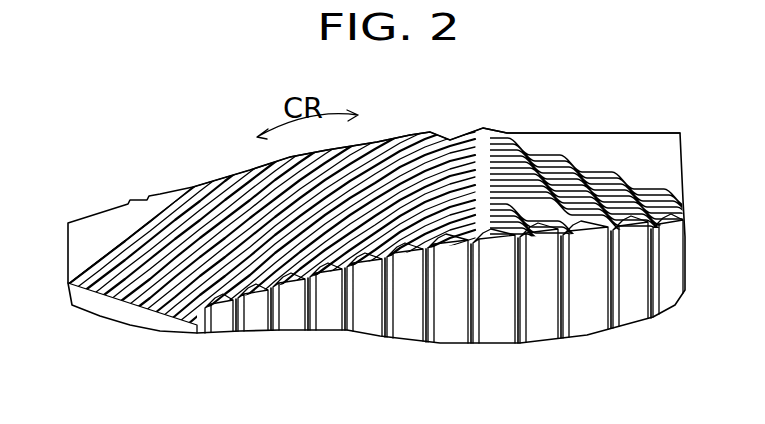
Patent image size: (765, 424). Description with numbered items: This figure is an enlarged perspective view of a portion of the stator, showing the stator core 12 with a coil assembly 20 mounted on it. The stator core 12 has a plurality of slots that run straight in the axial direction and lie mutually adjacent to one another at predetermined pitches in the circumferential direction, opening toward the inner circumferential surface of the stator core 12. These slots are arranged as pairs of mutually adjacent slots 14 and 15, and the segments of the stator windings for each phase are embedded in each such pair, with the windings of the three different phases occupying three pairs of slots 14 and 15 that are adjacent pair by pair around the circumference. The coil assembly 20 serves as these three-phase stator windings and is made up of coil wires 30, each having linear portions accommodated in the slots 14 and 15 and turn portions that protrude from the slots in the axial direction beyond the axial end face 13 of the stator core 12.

The stator core 12 is at (145, 202).
The axial end face 13 is at (92, 228).
The slot 14 is at (203, 334).
The slot 15 is at (236, 334).
The coil assembly 20 is at (436, 117).
The coil wire 30 is at (193, 188).